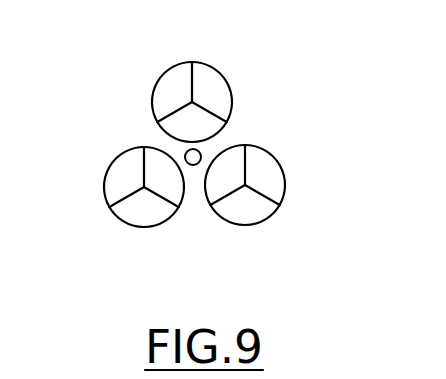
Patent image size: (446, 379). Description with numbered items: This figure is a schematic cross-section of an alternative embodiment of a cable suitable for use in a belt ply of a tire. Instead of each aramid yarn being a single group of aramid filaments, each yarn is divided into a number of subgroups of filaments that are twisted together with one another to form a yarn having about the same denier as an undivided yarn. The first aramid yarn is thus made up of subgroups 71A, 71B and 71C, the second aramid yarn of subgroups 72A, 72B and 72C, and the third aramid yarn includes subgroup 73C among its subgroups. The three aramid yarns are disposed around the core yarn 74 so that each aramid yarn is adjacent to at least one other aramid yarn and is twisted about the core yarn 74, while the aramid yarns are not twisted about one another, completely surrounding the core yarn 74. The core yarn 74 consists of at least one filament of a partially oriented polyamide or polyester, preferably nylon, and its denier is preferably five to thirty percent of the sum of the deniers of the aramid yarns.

The subgroup of aramid filaments 71A is at (167, 85).
The subgroup of aramid filaments 71B is at (213, 80).
The subgroup of aramid filaments 71C is at (212, 130).
The subgroup of aramid filaments 72A is at (120, 172).
The subgroup of aramid filaments 72B is at (160, 154).
The subgroup of aramid filaments 72C is at (138, 217).
The subgroup of aramid filaments 73C is at (270, 167).
The core yarn 74 is at (186, 150).